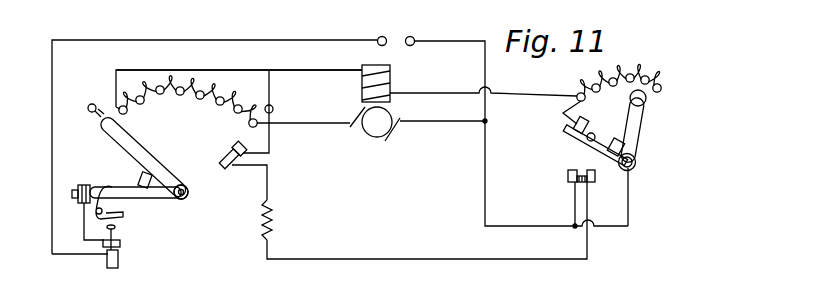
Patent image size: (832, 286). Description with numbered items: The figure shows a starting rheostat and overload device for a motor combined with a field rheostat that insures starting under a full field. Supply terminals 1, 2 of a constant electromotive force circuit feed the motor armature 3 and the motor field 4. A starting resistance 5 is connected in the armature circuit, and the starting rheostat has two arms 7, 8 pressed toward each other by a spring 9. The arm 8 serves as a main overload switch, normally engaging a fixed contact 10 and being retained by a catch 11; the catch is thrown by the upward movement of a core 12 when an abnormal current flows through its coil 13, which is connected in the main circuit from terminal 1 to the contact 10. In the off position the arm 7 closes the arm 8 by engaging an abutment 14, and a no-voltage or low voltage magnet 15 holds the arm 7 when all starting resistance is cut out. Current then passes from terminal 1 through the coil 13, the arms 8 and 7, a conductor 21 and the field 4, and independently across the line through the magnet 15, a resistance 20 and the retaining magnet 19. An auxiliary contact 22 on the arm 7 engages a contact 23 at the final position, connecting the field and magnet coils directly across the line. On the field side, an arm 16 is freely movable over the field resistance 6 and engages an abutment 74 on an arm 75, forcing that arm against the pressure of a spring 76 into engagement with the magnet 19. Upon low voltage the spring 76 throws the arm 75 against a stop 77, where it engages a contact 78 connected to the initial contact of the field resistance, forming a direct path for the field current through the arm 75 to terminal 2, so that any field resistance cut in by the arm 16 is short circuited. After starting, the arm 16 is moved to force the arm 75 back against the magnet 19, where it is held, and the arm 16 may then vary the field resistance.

The supply terminal 1 is at (379, 31).
The supply terminal 2 is at (410, 31).
The motor armature 3 is at (375, 124).
The motor field 4 is at (362, 86).
The starting resistance 5 is at (186, 102).
The field resistance 6 is at (619, 77).
The arm 7 is at (142, 158).
The arm 8 is at (132, 193).
The spring 9 is at (164, 197).
The fixed contact 10 is at (84, 185).
The catch 11 is at (90, 208).
The core 12 is at (118, 265).
The coil 13 is at (120, 243).
The abutment 14 is at (140, 177).
The no-voltage or low voltage magnet 15 is at (226, 155).
The controlling arm of the field rheostat 16 is at (645, 115).
The retaining magnet 19 is at (582, 183).
The resistance 20 is at (278, 220).
The conductor 21 is at (230, 69).
The auxiliary contact 22 is at (92, 104).
The contact 23 is at (273, 105).
The abutment 74 is at (622, 147).
The arm 75 is at (590, 152).
The spring 76 is at (636, 163).
The stop 77 is at (592, 133).
The contact 78 is at (574, 125).